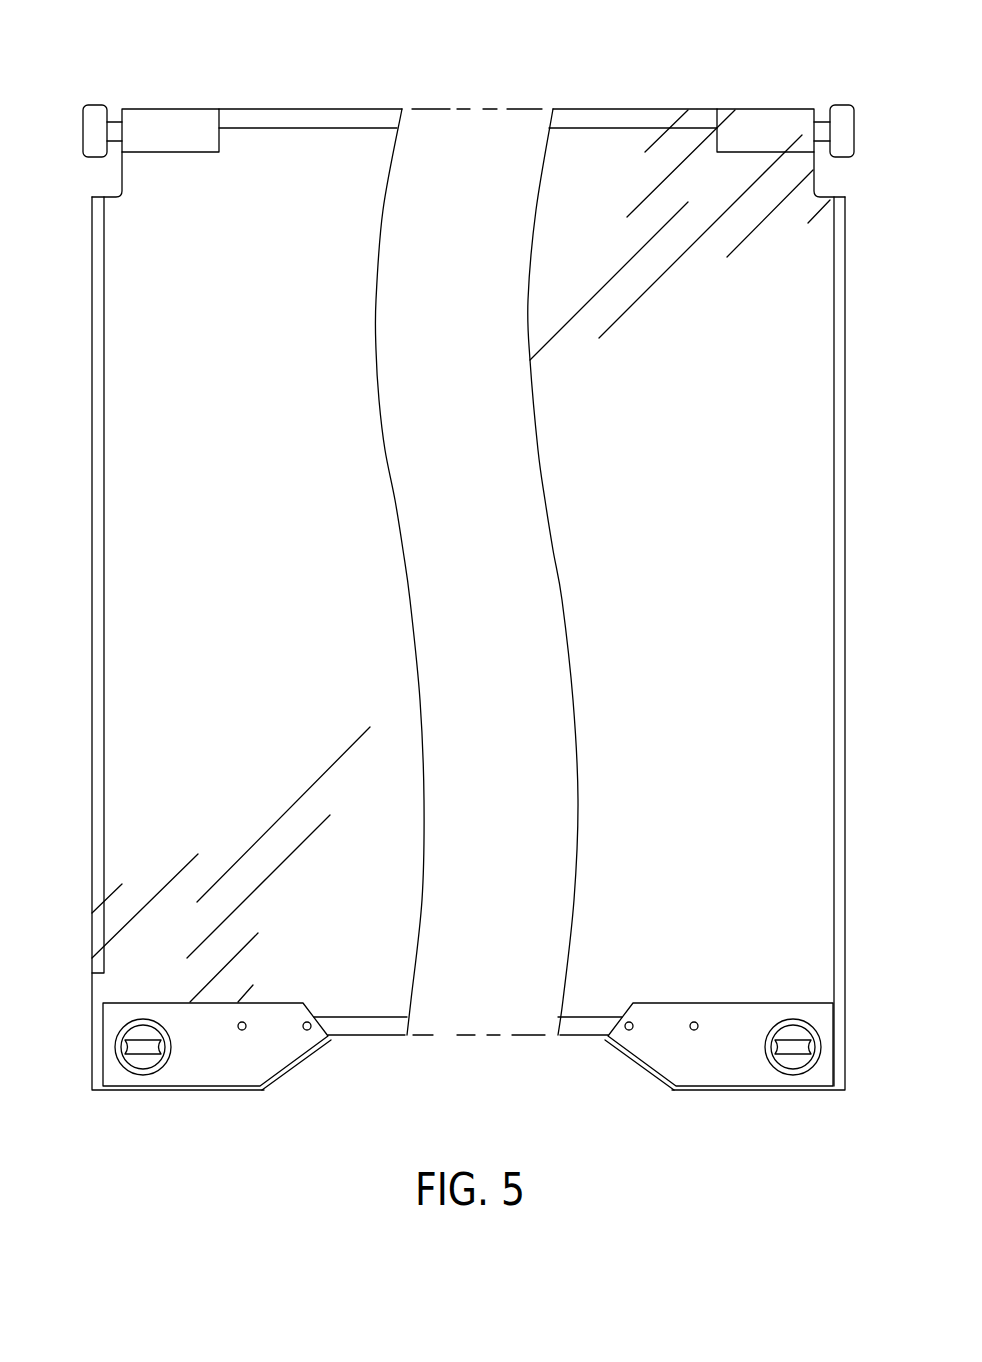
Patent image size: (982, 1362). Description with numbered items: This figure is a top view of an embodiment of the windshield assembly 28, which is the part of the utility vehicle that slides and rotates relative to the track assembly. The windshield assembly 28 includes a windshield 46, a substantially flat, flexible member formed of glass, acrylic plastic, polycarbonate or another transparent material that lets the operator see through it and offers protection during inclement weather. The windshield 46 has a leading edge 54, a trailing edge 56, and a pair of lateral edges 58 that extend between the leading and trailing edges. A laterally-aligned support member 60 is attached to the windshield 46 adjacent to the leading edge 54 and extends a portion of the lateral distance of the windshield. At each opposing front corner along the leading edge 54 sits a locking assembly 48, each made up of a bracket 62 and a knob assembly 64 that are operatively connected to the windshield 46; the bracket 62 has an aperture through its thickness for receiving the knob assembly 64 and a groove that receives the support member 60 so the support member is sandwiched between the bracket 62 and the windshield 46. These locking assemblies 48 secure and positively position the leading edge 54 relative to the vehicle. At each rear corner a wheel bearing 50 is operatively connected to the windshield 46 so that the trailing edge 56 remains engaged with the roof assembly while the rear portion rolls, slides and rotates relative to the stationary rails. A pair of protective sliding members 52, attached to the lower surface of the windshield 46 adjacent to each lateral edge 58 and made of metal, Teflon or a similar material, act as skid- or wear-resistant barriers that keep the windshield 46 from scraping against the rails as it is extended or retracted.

The windshield assembly 28 is at (224, 34).
The windshield 46 is at (156, 791).
The locking assembly 48 is at (236, 1092).
The wheel bearing 50 is at (92, 103).
The protective sliding member 52 is at (90, 481).
The leading edge 54 is at (362, 1037).
The trailing edge 56 is at (611, 108).
The lateral edge 58 is at (92, 630).
The support member 60 is at (583, 1029).
The bracket 62 is at (193, 1052).
The knob assembly 64 is at (142, 1062).